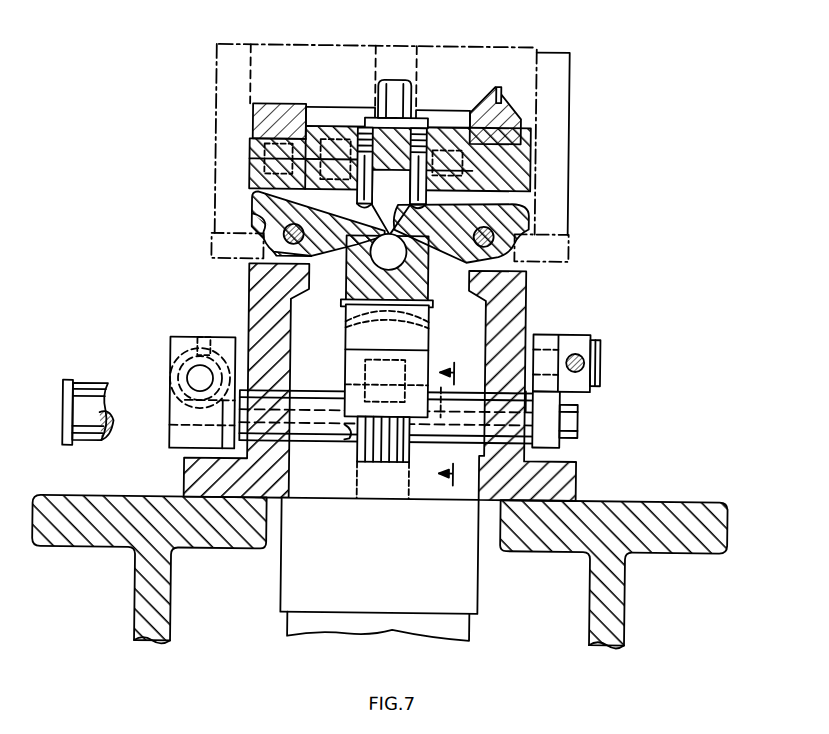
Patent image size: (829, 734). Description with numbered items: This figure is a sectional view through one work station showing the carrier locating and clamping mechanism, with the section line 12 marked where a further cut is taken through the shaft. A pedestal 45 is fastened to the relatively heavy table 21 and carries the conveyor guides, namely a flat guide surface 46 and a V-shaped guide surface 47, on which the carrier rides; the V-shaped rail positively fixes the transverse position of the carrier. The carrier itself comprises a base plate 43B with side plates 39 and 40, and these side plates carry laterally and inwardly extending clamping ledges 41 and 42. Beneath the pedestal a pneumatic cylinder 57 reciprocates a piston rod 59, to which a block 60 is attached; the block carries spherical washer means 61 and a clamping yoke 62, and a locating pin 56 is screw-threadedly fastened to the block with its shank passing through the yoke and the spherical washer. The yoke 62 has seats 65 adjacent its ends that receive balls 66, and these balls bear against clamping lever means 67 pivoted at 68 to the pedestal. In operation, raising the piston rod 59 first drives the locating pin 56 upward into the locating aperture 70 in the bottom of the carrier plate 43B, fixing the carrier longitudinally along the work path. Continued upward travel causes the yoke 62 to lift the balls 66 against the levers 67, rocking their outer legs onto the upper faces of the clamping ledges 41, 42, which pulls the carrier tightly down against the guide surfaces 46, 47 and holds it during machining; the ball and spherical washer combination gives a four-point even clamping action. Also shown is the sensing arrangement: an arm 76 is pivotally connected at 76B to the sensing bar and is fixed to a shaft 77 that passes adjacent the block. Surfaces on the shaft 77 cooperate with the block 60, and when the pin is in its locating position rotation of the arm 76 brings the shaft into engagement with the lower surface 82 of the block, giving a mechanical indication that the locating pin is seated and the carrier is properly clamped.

The section line 12 is at (459, 425).
The table 21 is at (680, 496).
The side plate 39 is at (212, 161).
The side plate 40 is at (566, 156).
The clamping ledge 41 is at (557, 240).
The clamping ledge 42 is at (212, 251).
The carrier base plate 43B is at (300, 44).
The pedestal 45 is at (528, 297).
The flat guide surface 46 is at (290, 105).
The V-shaped guide surface 47 is at (520, 127).
The locating pin 56 is at (406, 92).
The pneumatic cylinder 57 is at (468, 573).
The piston rod 59 is at (385, 455).
The block 60 is at (420, 363).
The spherical washer means 61 is at (428, 314).
The clamping yoke 62 is at (429, 291).
The seat 65 is at (385, 270).
The ball 66 is at (380, 257).
The clamping lever means 67 is at (268, 203).
The pivot 68 is at (268, 221).
The locating aperture 70 is at (383, 50).
The arm 76 is at (580, 398).
The pivotal connection 76B is at (602, 359).
The shaft 77 is at (318, 393).
The lower surface 82 is at (346, 441).